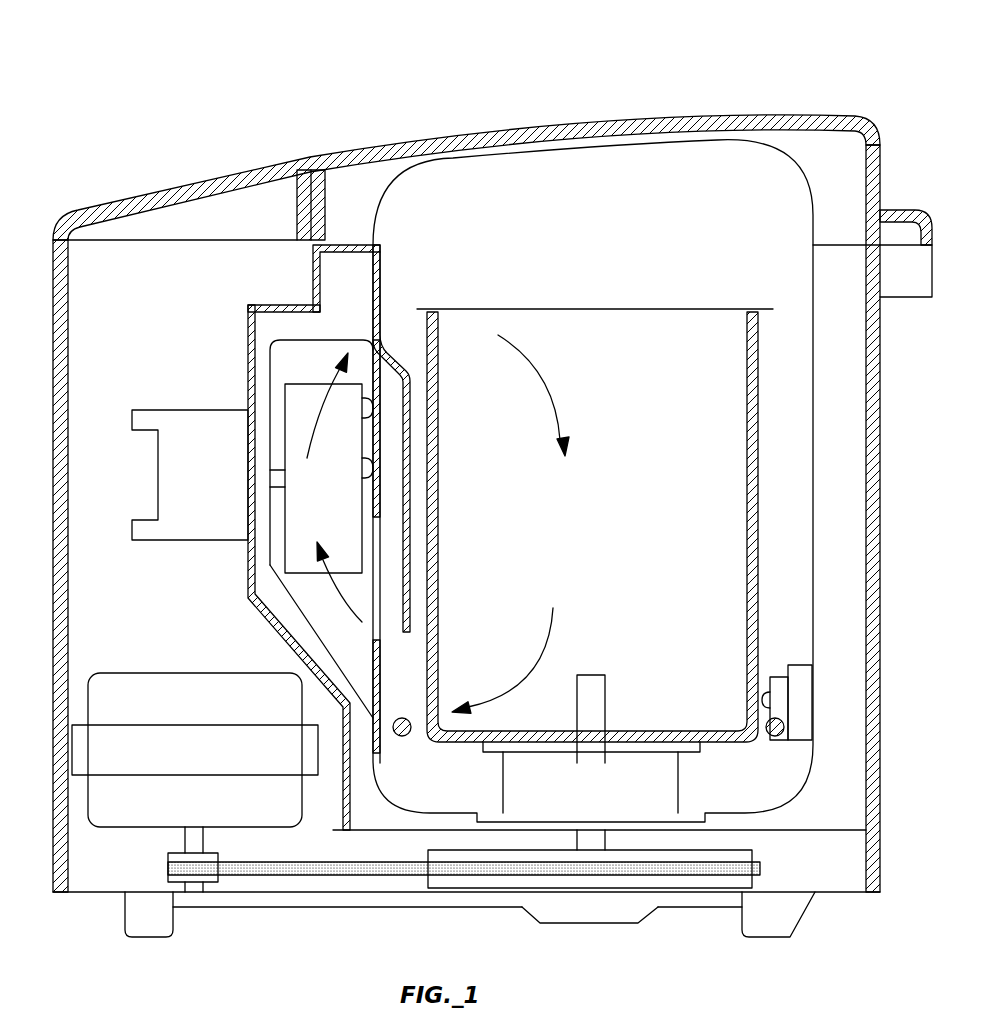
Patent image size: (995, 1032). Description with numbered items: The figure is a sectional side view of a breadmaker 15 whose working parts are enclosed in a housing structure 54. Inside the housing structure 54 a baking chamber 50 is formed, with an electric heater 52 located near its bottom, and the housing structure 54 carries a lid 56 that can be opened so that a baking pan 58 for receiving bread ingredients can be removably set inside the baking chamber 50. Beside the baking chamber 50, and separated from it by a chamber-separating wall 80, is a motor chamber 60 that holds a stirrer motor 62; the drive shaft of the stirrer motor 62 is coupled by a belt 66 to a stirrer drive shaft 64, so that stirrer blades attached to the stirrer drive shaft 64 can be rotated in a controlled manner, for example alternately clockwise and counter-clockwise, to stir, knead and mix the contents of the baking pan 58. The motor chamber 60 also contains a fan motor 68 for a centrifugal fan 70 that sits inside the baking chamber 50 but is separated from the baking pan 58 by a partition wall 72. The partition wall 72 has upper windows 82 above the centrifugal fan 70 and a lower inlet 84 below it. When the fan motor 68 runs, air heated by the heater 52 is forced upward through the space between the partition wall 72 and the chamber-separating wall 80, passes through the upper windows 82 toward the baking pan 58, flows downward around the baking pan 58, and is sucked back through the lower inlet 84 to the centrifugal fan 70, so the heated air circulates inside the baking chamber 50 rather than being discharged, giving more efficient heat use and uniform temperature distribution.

The breadmaker 15 is at (459, 66).
The baking chamber 50 is at (600, 160).
The electric heater 52 is at (401, 738).
The housing structure 54 is at (880, 543).
The lid 56 is at (430, 138).
The baking pan 58 is at (760, 415).
The motor chamber 60 is at (142, 252).
The stirrer motor 62 is at (152, 680).
The stirrer drive shaft 64 is at (598, 702).
The belt 66 is at (297, 873).
The fan motor 68 is at (200, 420).
The centrifugal fan 70 is at (267, 406).
The partition wall 72 is at (382, 276).
The chamber-separating wall 80 is at (288, 302).
The upper windows 82 is at (372, 358).
The lower inlet 84 is at (437, 650).